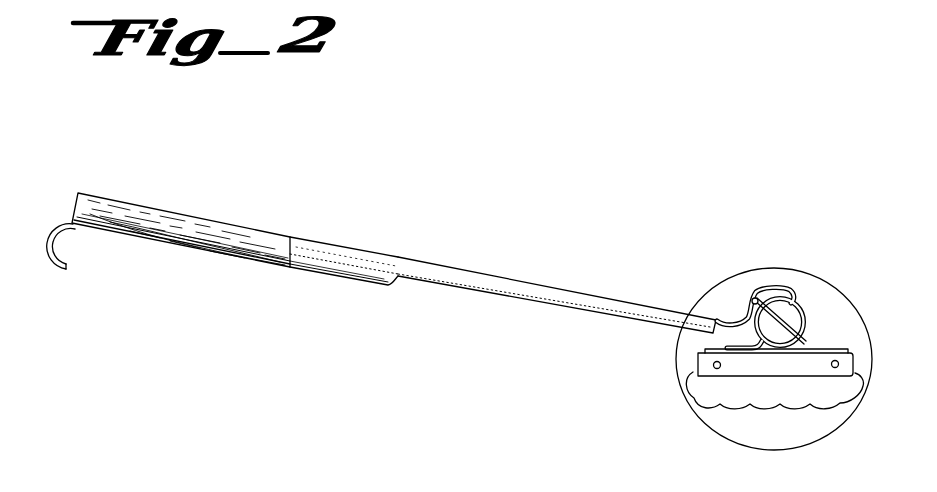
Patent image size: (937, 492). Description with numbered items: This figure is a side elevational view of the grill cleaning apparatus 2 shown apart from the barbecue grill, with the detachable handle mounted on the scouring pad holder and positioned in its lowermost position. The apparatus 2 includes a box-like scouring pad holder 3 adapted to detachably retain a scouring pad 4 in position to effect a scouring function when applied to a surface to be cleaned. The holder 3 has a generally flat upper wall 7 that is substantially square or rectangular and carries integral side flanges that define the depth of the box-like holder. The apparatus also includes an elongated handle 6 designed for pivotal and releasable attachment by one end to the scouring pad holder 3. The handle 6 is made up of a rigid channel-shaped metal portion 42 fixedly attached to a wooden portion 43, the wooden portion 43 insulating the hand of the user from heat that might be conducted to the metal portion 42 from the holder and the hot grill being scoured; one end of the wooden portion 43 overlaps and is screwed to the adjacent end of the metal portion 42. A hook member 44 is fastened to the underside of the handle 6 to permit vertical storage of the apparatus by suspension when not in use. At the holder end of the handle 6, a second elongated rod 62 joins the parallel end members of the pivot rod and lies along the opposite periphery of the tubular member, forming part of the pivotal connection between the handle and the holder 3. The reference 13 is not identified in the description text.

The grill cleaning apparatus 2 is at (590, 273).
The scouring pad holder 3 is at (682, 306).
The scouring pad 4 is at (816, 393).
The elongated handle 6 is at (367, 248).
The upper wall 7 is at (817, 358).
The mounting plate 13 is at (695, 360).
The channel-shaped metal portion 42 is at (494, 287).
The wooden portion 43 is at (157, 222).
The hook member 44 is at (63, 260).
The second elongated rod 62 is at (807, 338).